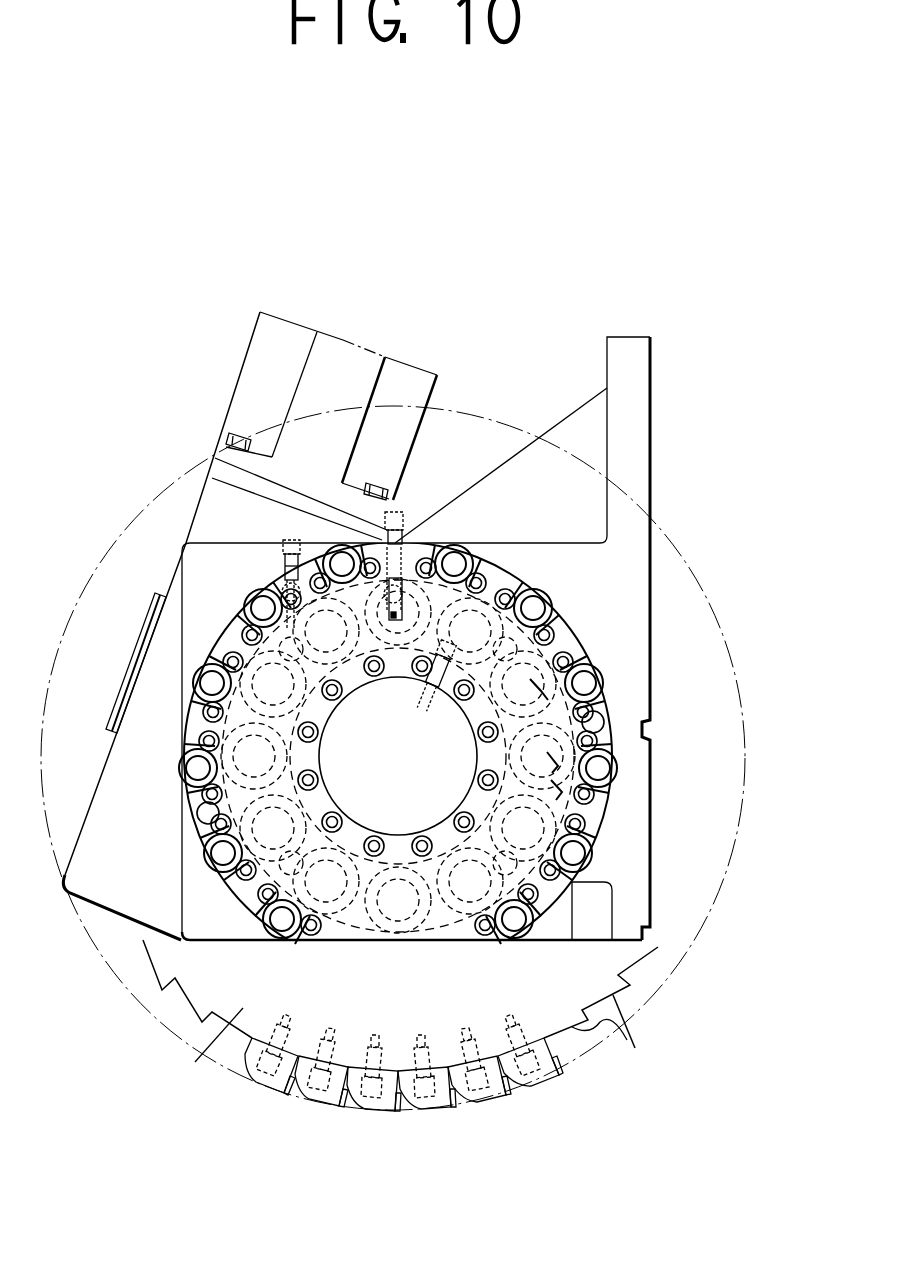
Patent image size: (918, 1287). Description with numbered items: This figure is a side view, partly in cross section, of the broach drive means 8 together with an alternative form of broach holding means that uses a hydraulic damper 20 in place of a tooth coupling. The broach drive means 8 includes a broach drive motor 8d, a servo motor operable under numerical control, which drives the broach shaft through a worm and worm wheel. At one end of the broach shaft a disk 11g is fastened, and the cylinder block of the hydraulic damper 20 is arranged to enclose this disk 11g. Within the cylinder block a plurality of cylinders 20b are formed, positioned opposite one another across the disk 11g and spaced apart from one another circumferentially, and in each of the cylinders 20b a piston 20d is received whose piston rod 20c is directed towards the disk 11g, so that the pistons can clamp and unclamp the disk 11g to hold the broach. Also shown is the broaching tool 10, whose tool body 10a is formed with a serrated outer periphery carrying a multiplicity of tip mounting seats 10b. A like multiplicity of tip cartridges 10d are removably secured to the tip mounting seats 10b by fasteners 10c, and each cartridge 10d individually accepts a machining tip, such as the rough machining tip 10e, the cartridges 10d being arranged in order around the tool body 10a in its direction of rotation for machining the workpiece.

The broach drive means 8 is at (186, 520).
The broach drive motor 8d is at (308, 390).
The disk 11g is at (532, 648).
The hydraulic damper 20 is at (792, 806).
The cylinders 20b is at (557, 787).
The piston rod 20c is at (540, 693).
The piston 20d is at (553, 760).
The broaching tool 10 is at (425, 1044).
The tool body 10a is at (200, 1050).
The tip mounting seats 10b is at (653, 1005).
The fasteners 10c is at (477, 1098).
The tip cartridges 10d is at (325, 1098).
The rough machining tip 10e is at (380, 1112).